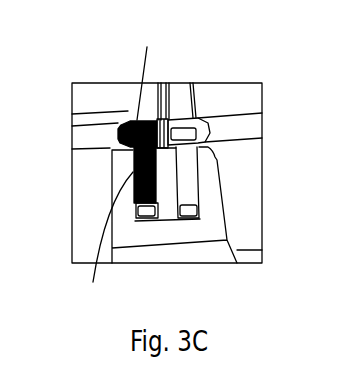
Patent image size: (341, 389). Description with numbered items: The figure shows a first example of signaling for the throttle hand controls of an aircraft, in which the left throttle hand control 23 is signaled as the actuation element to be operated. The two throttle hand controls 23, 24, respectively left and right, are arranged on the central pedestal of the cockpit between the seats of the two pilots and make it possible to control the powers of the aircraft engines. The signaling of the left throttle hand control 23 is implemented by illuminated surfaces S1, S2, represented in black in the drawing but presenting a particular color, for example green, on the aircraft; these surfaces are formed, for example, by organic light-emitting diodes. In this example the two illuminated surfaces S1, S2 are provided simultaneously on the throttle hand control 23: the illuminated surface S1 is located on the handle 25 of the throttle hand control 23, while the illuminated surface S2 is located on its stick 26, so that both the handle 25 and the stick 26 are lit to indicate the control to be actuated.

The throttle hand control 23 is at (133, 173).
The throttle hand control 24 is at (190, 178).
The handle 25 is at (126, 117).
The stick 26 is at (120, 167).
The illuminated surface S1 is at (146, 75).
The illuminated surface S2 is at (105, 240).